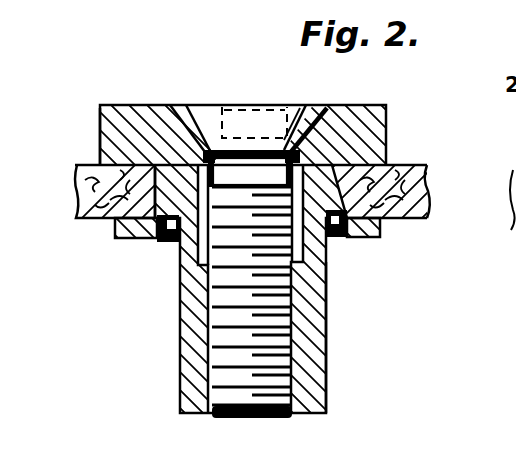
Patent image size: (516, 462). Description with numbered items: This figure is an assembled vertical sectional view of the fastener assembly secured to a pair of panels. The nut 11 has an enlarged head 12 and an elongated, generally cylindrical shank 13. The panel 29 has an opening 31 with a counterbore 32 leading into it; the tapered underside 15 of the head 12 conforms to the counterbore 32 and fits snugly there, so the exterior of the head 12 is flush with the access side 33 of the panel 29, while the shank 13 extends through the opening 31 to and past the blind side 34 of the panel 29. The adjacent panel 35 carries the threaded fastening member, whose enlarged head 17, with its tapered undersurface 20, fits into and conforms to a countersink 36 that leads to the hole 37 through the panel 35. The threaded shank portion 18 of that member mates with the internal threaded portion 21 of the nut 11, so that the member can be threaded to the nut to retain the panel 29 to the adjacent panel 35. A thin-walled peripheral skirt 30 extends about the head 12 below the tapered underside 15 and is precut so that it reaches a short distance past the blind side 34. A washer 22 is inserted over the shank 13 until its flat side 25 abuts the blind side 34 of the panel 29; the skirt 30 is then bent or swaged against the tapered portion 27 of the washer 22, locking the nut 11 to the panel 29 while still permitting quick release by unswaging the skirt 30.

The nut 11 is at (150, 353).
The enlarged head 12 is at (182, 150).
The shank 13 is at (318, 353).
The underside 15 is at (77, 222).
The enlarged head 17 is at (290, 107).
The threaded shank portion 18 is at (230, 379).
The tapered undersurface 20 is at (504, 406).
The internal threaded portion 21 is at (316, 393).
The washer 22 is at (376, 241).
The flat side 25 is at (112, 226).
The tapered portion 27 is at (340, 241).
The panel 29 is at (392, 195).
The peripheral skirt 30 is at (168, 243).
The opening 31 is at (330, 200).
The counterbore 32 is at (165, 135).
The access side 33 is at (84, 165).
The blind side 34 is at (418, 222).
The panel 35 is at (107, 133).
The countersink 36 is at (298, 127).
The hole 37 is at (217, 150).